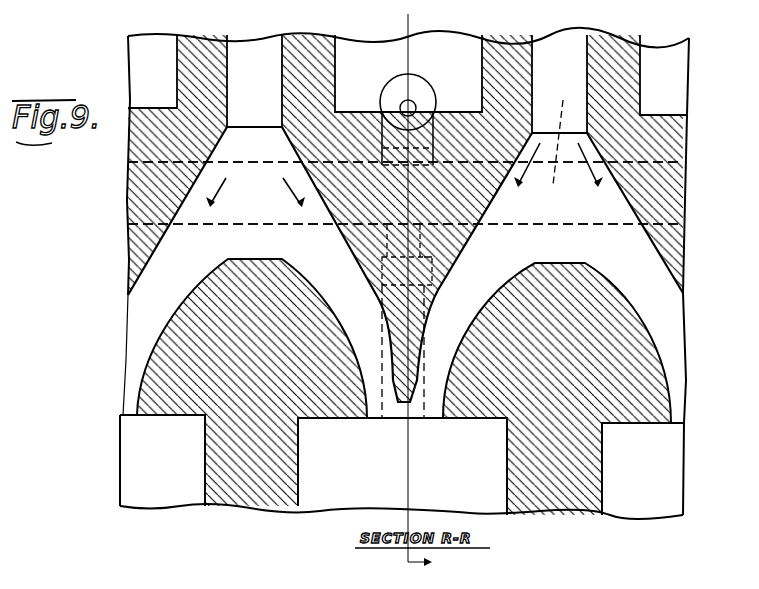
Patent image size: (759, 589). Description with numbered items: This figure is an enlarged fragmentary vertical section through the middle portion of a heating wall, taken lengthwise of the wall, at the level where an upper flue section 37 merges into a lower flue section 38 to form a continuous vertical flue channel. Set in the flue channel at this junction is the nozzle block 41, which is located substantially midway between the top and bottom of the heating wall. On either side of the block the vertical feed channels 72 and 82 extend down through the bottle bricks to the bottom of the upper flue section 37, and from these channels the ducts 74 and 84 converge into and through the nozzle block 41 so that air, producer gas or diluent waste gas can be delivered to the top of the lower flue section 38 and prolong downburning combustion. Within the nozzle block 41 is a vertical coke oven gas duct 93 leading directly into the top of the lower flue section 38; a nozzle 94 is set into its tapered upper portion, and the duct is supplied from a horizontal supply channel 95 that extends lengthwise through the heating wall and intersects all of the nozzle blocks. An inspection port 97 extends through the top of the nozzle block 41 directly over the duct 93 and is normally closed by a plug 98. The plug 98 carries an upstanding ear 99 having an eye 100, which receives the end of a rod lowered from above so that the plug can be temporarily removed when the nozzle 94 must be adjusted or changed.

The vertical feed channel 82 is at (260, 65).
The vertical feed channel 72 is at (562, 68).
The upper flue section 37 is at (452, 62).
The upstanding ear 99 is at (428, 98).
The eye 100 is at (410, 106).
The plug 98 is at (395, 100).
The horizontal supply channel 95 is at (556, 137).
The inspection port 97 is at (395, 152).
The nozzle 94 is at (488, 223).
The nozzle block 41 is at (125, 248).
The duct 84 is at (252, 338).
The duct 74 is at (557, 343).
The lower flue section 38 is at (401, 465).
The vertical coke oven gas duct 93 is at (392, 405).